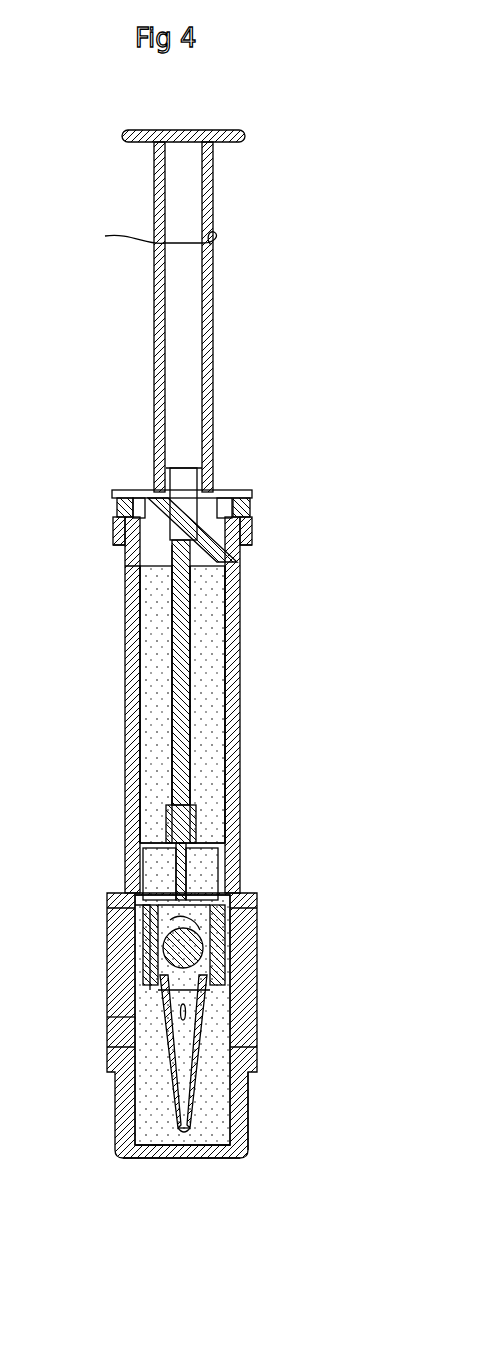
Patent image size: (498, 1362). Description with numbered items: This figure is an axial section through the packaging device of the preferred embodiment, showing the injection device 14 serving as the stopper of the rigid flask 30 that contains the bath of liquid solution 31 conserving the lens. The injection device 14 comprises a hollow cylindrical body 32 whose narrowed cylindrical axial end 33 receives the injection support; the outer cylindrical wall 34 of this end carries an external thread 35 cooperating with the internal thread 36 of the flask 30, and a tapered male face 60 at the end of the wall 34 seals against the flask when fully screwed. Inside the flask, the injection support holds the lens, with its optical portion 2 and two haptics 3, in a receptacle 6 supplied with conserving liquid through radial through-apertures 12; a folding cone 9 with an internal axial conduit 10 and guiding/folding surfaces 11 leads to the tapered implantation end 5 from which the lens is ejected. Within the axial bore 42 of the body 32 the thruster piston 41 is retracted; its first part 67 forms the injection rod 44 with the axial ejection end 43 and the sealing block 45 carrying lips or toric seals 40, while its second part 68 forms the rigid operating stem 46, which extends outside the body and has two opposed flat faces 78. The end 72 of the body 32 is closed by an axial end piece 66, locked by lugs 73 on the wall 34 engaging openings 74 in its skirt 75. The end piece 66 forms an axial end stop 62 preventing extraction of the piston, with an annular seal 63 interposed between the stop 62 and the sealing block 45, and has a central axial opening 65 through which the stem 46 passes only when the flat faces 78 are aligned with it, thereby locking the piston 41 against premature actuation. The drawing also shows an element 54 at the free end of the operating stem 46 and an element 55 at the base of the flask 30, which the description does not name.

The plunger head 54 is at (135, 131).
The operating stem 46 is at (157, 228).
The flat faces 78 is at (150, 268).
The second part 68 is at (185, 310).
The annular seal 63 is at (158, 492).
The central axial opening 65 is at (207, 492).
The axial end piece 66 is at (232, 496).
The sealing block 45 is at (242, 525).
The axial end stop 62 is at (132, 498).
The skirt 75 is at (121, 517).
The openings 74 is at (118, 522).
The lugs 73 is at (120, 530).
The end of hollow cylindrical body 72 is at (246, 548).
The lips or toric seals 40 is at (125, 560).
The injection device 14 is at (238, 590).
The axial bore 42 is at (140, 610).
The hollow cylindrical body 32 is at (232, 642).
The injection rod 44 is at (150, 648).
The thruster piston 41 is at (168, 690).
The outer cylindrical wall 34 is at (232, 725).
The first part 67 is at (232, 748).
The external thread 35 is at (225, 892).
The internal thread 36 is at (240, 900).
The axial ejection end 43 is at (183, 915).
The rigid flask 30 is at (160, 1160).
The receptacle 6 is at (133, 920).
The haptics 3 is at (250, 925).
The tapered male face 60 is at (255, 940).
The cylindrical axial end 33 is at (170, 930).
The optical portion 2 is at (255, 952).
The radial through-apertures 12 is at (140, 1020).
The folding cone 9 is at (250, 1025).
The guiding/folding surfaces 11 is at (130, 1045).
The internal axial conduit 10 is at (160, 1120).
The bath of liquid solution 31 is at (248, 1110).
The housing base 55 is at (210, 1160).
The implantation end 5 is at (190, 1140).